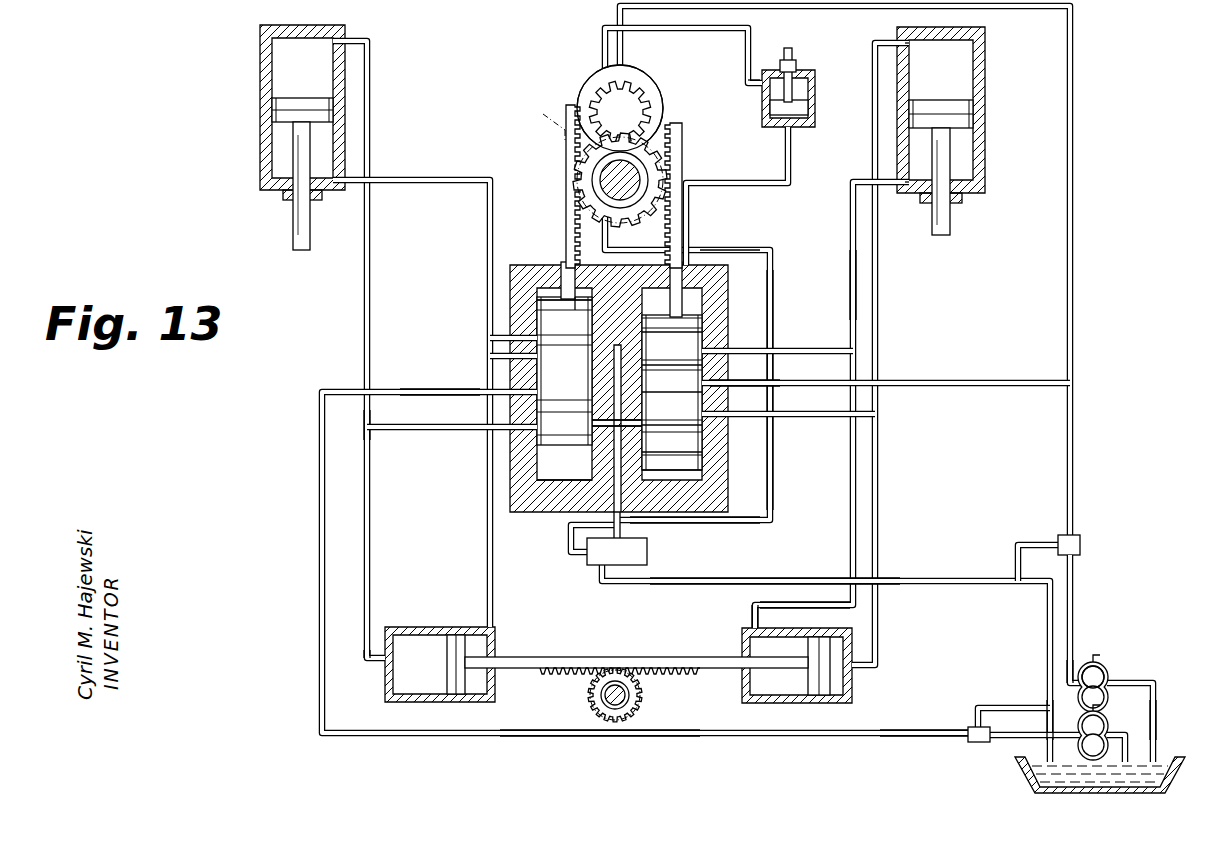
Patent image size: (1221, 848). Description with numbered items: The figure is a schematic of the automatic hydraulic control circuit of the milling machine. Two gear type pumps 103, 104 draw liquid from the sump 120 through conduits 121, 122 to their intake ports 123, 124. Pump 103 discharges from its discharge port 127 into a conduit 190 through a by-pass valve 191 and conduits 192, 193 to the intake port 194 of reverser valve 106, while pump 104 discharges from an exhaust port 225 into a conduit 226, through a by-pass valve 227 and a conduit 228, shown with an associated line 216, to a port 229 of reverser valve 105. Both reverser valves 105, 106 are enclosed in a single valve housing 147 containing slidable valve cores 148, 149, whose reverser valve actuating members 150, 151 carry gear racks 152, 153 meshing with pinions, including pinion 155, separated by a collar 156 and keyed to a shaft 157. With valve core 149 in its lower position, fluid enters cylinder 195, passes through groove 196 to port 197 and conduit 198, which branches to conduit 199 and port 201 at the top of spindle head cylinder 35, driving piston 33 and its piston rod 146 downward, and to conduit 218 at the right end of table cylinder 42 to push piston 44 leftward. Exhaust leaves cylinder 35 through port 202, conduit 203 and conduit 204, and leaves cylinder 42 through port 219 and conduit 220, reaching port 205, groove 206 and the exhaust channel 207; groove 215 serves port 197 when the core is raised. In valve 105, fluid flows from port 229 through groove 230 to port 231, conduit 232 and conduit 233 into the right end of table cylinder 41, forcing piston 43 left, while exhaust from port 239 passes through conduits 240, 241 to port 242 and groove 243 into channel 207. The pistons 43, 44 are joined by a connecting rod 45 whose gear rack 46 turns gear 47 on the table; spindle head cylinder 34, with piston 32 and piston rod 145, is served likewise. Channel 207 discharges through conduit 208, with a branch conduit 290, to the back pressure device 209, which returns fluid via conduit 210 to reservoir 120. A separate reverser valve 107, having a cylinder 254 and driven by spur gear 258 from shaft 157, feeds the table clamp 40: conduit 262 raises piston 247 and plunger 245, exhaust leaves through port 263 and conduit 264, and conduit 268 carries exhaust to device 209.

The spindle head cylinder 34 is at (262, 74).
The piston 32 is at (300, 96).
The piston rod 145 is at (293, 230).
The reverser valve 107 is at (584, 71).
The spur gear 258 is at (626, 95).
The conduit 264 is at (736, 33).
The cylinder 254 is at (690, 80).
The gear rack 152 is at (566, 140).
The reverser valve actuating member 150 is at (575, 175).
The reverser valve actuating member 151 is at (700, 118).
The gear rack 153 is at (683, 145).
The pinion 155 is at (649, 179).
The shaft 157 is at (640, 195).
The collar 156 is at (628, 200).
The reverser valve 105 is at (533, 254).
The conduit 268 is at (702, 250).
The reverser valve 106 is at (771, 262).
The plunger 245 is at (790, 56).
The table clamp 40 is at (824, 68).
The piston 247 is at (810, 106).
The port 263 is at (763, 95).
The conduit 262 is at (783, 187).
The spindle head cylinder 35 is at (986, 48).
The port 201 is at (906, 48).
The piston 33 is at (975, 113).
The port 202 is at (912, 200).
The piston rod 146 is at (951, 222).
The conduit 203 is at (850, 292).
The conduit 199 is at (879, 300).
The conduit 192 is at (1073, 330).
The conduit 193 is at (960, 360).
The port 231 is at (540, 300).
The conduit 232 is at (491, 340).
The groove 230 is at (491, 358).
The exhaust channel 207 is at (600, 331).
The valve core 148 is at (563, 358).
The valve core 149 is at (703, 330).
The groove 206 is at (703, 333).
The port 205 is at (736, 352).
The groove 196 is at (703, 365).
The conduit 204 is at (788, 380).
The intake port 194 is at (703, 390).
The conduit 198 is at (810, 417).
The port 197 is at (703, 425).
The groove 215 is at (703, 450).
The cylinder 195 is at (703, 470).
The port 229 is at (492, 393).
The port 242 is at (506, 428).
The groove 243 is at (540, 425).
The conduit 241 is at (385, 428).
The conduit 233 is at (487, 500).
The conduit 240 is at (371, 538).
The valve housing 147 is at (531, 515).
The conduit 290 is at (566, 555).
The conduit 208 is at (652, 523).
The back pressure device 209 is at (649, 560).
The conduit 218 is at (879, 478).
The conduit 210 is at (935, 582).
The by-pass valve 191 is at (1082, 548).
The conduit 190 is at (1074, 576).
The port 239 is at (385, 640).
The connecting rod 45 is at (580, 655).
The conduit 220 is at (757, 615).
The port 219 is at (745, 632).
The piston 43 is at (458, 668).
The table cylinder 41 is at (385, 680).
The gear rack 46 is at (566, 673).
The gear 47 is at (640, 692).
The piston 44 is at (806, 690).
The table cylinder 42 is at (853, 688).
The conduit 216 is at (402, 756).
The conduit 228 is at (606, 738).
The by-pass valve 227 is at (976, 725).
The exhaust port 225 is at (1068, 735).
The discharge port 127 is at (1078, 665).
The intake port 124 is at (1110, 672).
The gear type pump 103 is at (1140, 681).
The intake port 123 is at (1112, 735).
The gear type pump 104 is at (1126, 718).
The conduit 122 is at (1156, 720).
The conduit 121 is at (1128, 745).
The conduit 226 is at (975, 741).
The sump 120 is at (1026, 776).